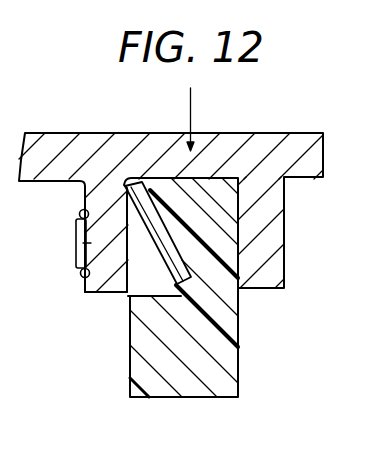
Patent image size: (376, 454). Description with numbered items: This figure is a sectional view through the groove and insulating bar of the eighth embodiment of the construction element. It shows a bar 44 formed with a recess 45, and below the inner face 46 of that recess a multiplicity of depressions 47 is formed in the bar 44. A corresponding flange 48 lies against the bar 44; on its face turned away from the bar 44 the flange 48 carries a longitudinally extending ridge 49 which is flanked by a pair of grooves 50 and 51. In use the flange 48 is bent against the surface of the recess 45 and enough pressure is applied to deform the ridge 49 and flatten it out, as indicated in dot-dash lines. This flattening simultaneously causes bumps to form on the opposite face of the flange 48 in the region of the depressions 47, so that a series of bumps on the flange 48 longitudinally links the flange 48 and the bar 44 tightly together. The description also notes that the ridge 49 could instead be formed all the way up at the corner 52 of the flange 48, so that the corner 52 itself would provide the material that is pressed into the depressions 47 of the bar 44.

The bar 44 is at (140, 363).
The recess 45 is at (127, 292).
The inner face 46 is at (169, 274).
The depressions 47 is at (155, 222).
The flange 48 is at (97, 198).
The ridge 49 is at (78, 250).
The groove 50 is at (81, 276).
The groove 51 is at (80, 218).
The corner 52 is at (86, 286).